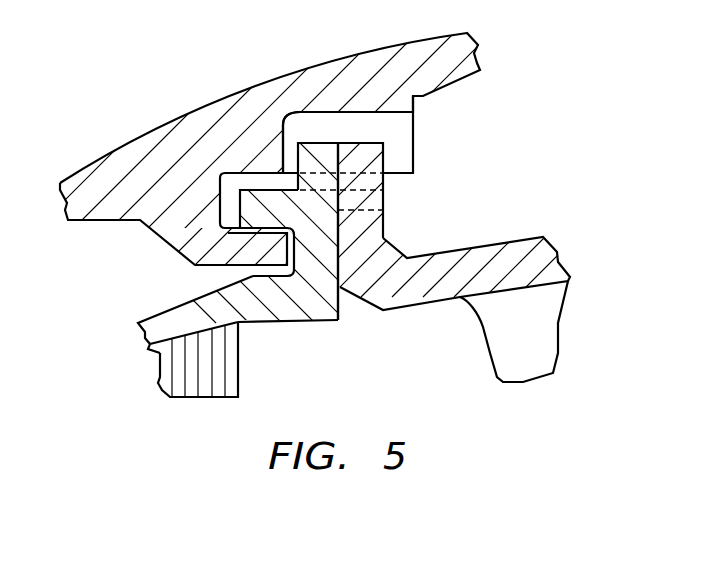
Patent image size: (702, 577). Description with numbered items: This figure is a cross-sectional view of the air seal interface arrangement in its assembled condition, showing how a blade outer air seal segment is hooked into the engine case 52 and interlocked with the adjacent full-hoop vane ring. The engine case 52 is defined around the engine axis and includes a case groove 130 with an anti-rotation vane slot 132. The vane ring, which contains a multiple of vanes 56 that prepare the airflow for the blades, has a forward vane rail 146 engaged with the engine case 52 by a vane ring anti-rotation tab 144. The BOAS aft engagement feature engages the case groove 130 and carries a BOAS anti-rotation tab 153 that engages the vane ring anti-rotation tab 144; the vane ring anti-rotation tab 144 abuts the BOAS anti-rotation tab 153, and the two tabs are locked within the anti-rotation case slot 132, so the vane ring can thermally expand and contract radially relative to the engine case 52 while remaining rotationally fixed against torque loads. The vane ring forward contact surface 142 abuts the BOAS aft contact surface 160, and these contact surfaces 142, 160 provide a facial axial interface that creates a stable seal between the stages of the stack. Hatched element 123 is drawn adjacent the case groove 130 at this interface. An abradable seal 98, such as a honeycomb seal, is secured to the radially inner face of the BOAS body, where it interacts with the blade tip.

The engine case 52 is at (205, 106).
The BOAS anti-rotation tab 153 is at (320, 162).
The anti-rotation vane slot 132 is at (397, 128).
The vane ring anti-rotation tab 144 is at (357, 160).
The vane ring forward contact surface 142 is at (338, 225).
The forward vane rail 146 is at (358, 227).
The vane 56 is at (538, 341).
The case groove 130 is at (238, 208).
The shroud hanger block 123 is at (247, 248).
The abradable seal 98 is at (193, 367).
The BOAS aft contact surface 160 is at (338, 261).